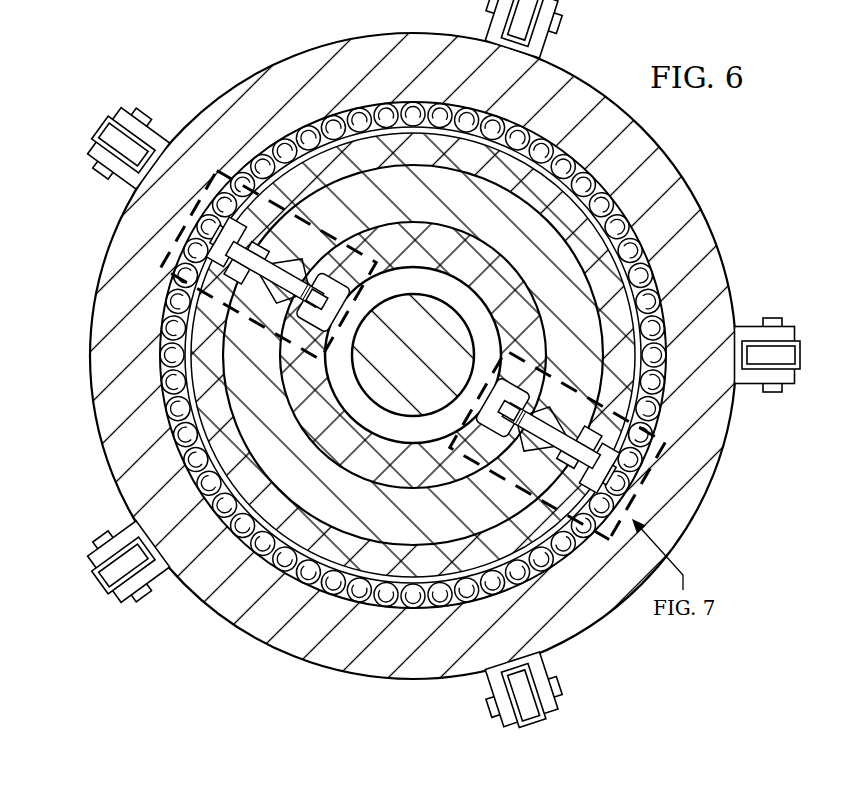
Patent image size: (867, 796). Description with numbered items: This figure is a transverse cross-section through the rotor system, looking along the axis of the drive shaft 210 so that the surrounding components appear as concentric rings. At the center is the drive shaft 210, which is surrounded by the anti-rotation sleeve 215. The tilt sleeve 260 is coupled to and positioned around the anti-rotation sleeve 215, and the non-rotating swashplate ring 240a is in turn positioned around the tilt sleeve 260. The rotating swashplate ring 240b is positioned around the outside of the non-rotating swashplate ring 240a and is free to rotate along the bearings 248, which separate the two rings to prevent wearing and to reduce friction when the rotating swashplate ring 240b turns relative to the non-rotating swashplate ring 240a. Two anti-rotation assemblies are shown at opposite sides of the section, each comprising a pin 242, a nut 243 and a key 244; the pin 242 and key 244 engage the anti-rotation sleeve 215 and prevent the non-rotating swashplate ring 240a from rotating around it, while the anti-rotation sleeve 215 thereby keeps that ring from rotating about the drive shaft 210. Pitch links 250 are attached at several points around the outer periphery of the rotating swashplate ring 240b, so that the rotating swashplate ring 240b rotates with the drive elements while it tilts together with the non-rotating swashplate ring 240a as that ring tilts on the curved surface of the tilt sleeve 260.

The drive shaft 210 is at (418, 345).
The anti-rotation sleeve 215 is at (434, 256).
The tilt sleeve 260 is at (431, 201).
The non-rotating swashplate ring 240a is at (380, 567).
The rotating swashplate ring 240b is at (313, 62).
The bearing 248 is at (263, 565).
The pitch link 250 is at (111, 123).
The pin 242 is at (237, 253).
The nut 243 is at (458, 402).
The key 244 is at (500, 460).